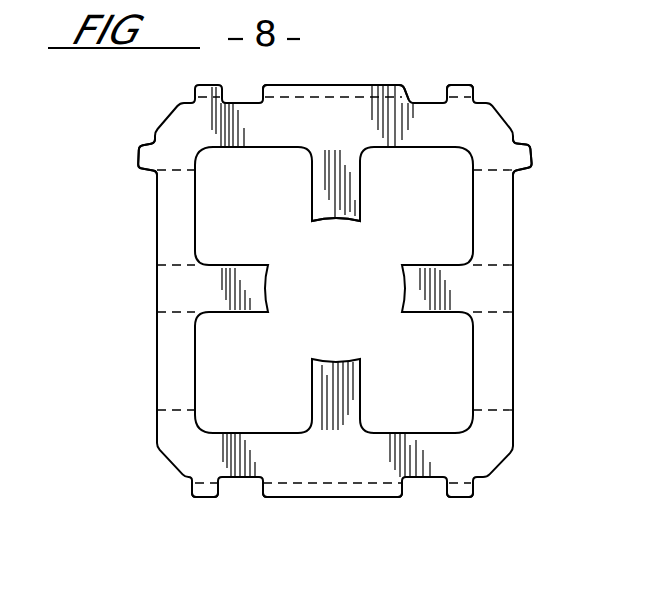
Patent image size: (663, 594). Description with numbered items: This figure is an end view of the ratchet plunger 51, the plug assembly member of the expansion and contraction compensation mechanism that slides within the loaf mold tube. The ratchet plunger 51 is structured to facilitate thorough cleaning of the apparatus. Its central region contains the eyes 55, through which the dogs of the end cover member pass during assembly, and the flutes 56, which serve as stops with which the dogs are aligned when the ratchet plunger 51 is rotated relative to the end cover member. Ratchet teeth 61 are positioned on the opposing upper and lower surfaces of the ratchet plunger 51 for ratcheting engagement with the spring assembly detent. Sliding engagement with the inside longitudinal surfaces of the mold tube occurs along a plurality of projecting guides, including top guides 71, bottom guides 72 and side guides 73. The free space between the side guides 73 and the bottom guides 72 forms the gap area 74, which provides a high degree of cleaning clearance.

The ratchet plunger 51 is at (148, 321).
The eye 55 is at (428, 200).
The flute 56 is at (312, 196).
The ratchet tooth 61 is at (344, 85).
The top guide 71 is at (462, 87).
The bottom guide 72 is at (205, 497).
The side guide 73 is at (143, 149).
The gap area 74 is at (523, 450).